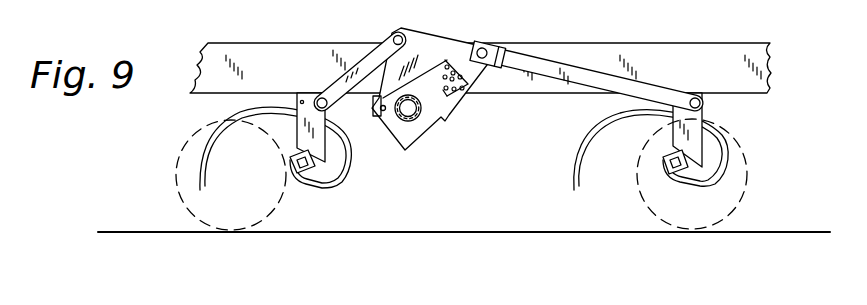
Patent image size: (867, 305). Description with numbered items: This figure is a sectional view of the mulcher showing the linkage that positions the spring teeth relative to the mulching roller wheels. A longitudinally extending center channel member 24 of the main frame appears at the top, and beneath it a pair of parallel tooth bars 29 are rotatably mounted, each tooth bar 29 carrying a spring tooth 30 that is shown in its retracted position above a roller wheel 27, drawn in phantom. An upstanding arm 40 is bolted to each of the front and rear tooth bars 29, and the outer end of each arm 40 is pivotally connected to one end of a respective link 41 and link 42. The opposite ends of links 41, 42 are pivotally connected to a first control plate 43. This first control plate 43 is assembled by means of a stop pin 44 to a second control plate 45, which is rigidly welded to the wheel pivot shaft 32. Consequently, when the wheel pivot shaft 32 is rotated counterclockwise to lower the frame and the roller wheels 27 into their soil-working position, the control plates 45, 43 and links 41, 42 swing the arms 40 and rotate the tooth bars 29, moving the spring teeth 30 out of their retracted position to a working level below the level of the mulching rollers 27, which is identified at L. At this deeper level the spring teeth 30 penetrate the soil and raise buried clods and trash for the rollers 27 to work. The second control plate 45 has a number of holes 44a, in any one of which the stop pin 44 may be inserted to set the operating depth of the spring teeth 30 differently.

The center channel member 24 is at (708, 43).
The roller wheel 27 is at (177, 160).
The tooth bar 29 is at (312, 172).
The spring tooth 30 is at (222, 124).
The wheel pivot shaft 32 is at (410, 121).
The upstanding arm 40 is at (296, 128).
The link 41 is at (367, 55).
The link 42 is at (547, 60).
The first control plate 43 is at (452, 18).
The stop pin 44 is at (468, 72).
The holes 44a is at (443, 90).
The second control plate 45 is at (433, 125).
The working level of the mulching rollers L is at (812, 215).